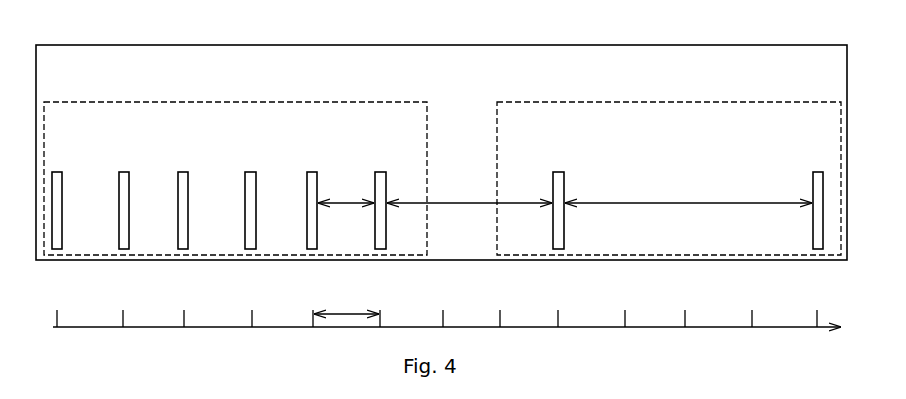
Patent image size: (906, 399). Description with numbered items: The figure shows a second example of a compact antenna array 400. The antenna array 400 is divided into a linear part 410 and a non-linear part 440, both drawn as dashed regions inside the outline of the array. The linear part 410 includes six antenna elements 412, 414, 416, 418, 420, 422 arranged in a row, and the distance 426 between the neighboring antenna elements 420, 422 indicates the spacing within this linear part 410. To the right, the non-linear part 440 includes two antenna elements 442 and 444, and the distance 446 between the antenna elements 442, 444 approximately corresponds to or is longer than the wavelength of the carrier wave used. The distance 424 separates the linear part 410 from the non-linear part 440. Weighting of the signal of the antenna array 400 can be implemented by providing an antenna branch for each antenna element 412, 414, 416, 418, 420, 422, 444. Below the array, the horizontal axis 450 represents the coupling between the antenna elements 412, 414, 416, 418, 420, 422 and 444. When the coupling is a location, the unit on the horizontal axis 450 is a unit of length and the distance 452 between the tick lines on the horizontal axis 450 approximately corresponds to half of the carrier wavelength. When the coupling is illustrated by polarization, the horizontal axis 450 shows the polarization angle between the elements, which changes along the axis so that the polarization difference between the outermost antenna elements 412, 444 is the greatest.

The antenna array 400 is at (89, 45).
The linear part 410 is at (238, 102).
The antenna element 412 is at (57, 172).
The antenna element 414 is at (124, 172).
The antenna element 416 is at (183, 172).
The antenna element 418 is at (250, 172).
The antenna element 420 is at (312, 172).
The antenna element 422 is at (380, 172).
The distance 424 is at (430, 203).
The distance 426 is at (349, 203).
The non-linear part 440 is at (536, 102).
The antenna element 442 is at (558, 172).
The antenna element 444 is at (818, 172).
The distance 446 is at (610, 203).
The horizontal axis 450 is at (137, 329).
The distance 452 is at (347, 314).